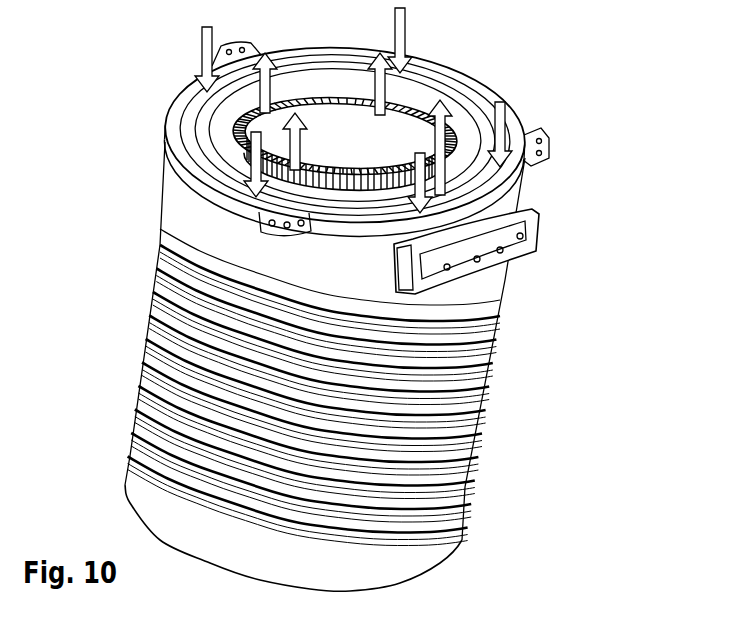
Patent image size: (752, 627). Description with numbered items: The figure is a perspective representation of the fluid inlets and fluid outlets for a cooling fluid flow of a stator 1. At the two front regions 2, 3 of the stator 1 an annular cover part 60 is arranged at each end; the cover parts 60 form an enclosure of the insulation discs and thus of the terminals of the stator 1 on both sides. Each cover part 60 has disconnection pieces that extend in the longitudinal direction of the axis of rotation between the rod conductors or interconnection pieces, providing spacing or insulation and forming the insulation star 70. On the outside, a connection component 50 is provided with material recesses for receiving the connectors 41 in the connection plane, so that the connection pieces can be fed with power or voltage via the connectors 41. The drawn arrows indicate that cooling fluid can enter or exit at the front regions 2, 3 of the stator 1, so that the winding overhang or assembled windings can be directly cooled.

The stator 1 is at (100, 60).
The front region 2 is at (160, 176).
The front region 3 is at (110, 445).
The connectors 41 is at (534, 231).
The connection component 50 is at (530, 212).
The annular cover part 60 is at (212, 95).
The insulation star 70 is at (397, 165).